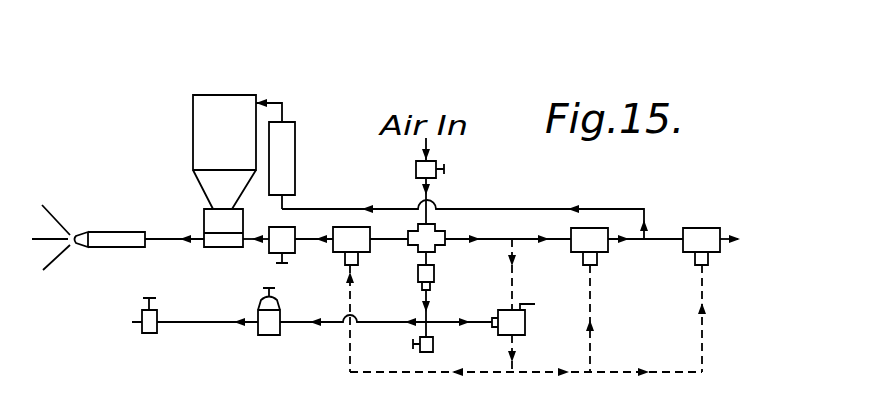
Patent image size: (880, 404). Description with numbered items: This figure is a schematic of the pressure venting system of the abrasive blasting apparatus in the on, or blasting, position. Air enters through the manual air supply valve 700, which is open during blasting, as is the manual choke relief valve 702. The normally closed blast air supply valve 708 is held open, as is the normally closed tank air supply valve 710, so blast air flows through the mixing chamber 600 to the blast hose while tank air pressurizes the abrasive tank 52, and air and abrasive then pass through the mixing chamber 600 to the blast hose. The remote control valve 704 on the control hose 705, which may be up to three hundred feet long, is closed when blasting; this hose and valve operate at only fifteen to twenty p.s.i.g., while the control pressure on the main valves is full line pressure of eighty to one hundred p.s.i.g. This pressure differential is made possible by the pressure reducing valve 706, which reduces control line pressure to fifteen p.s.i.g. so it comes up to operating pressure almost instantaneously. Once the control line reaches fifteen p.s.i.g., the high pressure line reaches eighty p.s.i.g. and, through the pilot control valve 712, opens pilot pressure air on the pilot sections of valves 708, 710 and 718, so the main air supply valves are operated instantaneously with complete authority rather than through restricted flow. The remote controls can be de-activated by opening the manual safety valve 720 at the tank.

The hopper 52 is at (213, 186).
The mixing chamber 600 is at (233, 243).
The manual air supply valve 700 is at (425, 171).
The manual choke relief valve 702 is at (291, 241).
The remote control valve 704 is at (150, 335).
The control hose 705 is at (172, 226).
The pressure reducing valve 706 is at (270, 333).
The blast air supply valve 708 is at (358, 242).
The tank air supply valve 710 is at (598, 244).
The pilot control valve 712 is at (513, 315).
The valve 718 is at (707, 244).
The manual safety valve 720 is at (434, 344).